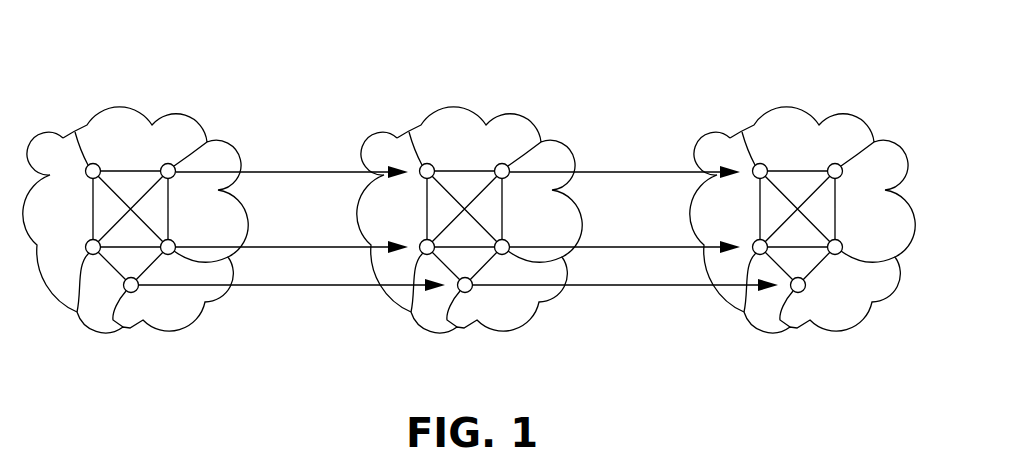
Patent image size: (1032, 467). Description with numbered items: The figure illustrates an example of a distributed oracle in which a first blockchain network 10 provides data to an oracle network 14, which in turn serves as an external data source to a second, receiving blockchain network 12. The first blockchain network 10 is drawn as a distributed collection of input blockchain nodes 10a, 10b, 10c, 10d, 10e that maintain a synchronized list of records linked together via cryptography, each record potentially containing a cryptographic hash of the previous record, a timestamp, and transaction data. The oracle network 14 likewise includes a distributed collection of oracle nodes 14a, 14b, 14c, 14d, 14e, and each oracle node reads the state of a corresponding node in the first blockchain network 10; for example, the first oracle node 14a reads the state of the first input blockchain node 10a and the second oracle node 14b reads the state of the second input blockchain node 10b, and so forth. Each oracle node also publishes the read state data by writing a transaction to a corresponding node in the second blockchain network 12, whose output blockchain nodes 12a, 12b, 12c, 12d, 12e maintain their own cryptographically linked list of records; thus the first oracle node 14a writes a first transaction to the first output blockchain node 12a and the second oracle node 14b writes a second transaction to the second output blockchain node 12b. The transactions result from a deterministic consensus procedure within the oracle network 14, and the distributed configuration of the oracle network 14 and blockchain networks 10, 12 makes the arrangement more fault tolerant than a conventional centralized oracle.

The first blockchain network 10 is at (135, 57).
The first input blockchain node 10a is at (130, 328).
The second input blockchain node 10b is at (228, 257).
The input blockchain node 10c is at (207, 142).
The input blockchain node 10d is at (63, 138).
The input blockchain node 10e is at (75, 311).
The oracle network 14 is at (472, 191).
The first oracle node 14a is at (438, 327).
The second oracle node 14b is at (375, 261).
The oracle node 14c is at (407, 131).
The oracle node 14d is at (563, 124).
The oracle node 14e is at (560, 263).
The second blockchain network 12 is at (786, 208).
The first output blockchain node 12a is at (760, 335).
The second output blockchain node 12b is at (870, 305).
The output blockchain node 12c is at (877, 135).
The output blockchain node 12d is at (731, 136).
The output blockchain node 12e is at (707, 257).